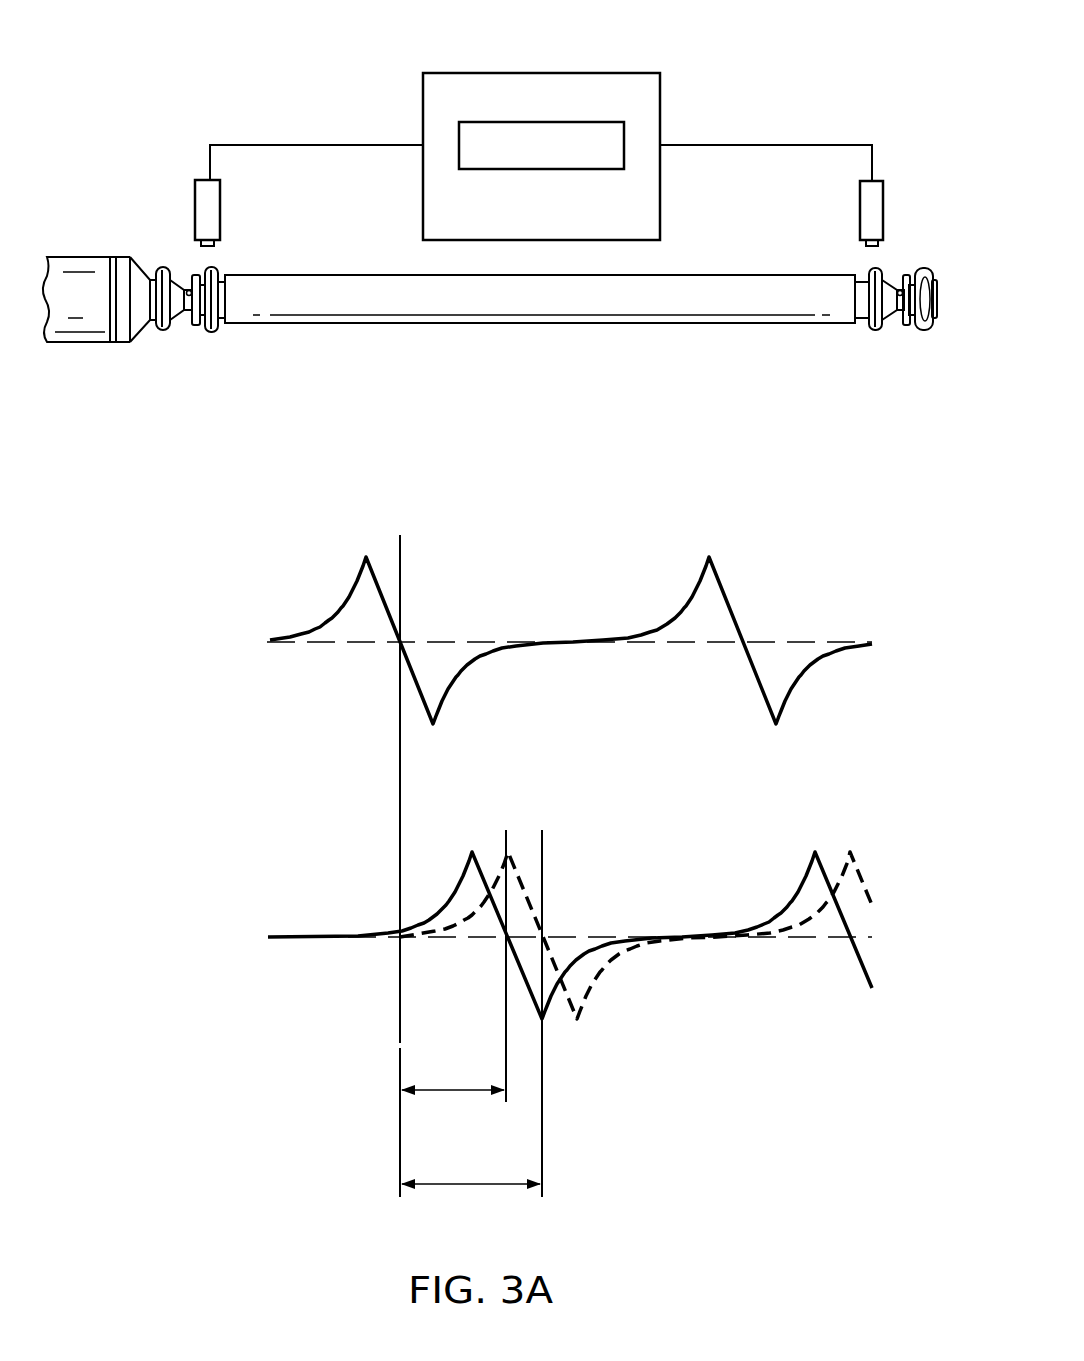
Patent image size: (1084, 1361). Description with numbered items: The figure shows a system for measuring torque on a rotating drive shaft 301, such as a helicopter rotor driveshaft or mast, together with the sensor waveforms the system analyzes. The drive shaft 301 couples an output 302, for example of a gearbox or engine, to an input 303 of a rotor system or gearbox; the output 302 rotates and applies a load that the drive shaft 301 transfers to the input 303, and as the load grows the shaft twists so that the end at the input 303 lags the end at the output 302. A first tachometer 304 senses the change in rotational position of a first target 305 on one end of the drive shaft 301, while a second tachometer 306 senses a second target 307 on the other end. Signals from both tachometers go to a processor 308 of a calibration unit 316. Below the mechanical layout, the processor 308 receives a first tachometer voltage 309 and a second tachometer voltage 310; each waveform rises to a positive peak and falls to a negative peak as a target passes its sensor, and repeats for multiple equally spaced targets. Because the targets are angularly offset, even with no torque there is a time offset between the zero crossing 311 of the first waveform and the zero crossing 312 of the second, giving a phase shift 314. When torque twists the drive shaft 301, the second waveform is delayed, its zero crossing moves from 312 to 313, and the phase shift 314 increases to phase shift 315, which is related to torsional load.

The drive shaft 301 is at (342, 275).
The output 302 is at (88, 342).
The input 303 is at (925, 330).
The first tachometer 304 is at (195, 210).
The first target 305 is at (213, 332).
The second tachometer 306 is at (883, 210).
The second target 307 is at (872, 330).
The processor 308 is at (543, 169).
The first tachometer voltage 309 is at (143, 575).
The second tachometer voltage 310 is at (143, 870).
The zero crossing 311 is at (408, 630).
The zero crossing 312 is at (499, 950).
The zero crossing 313 is at (549, 924).
The phase shift 314 is at (453, 1092).
The phase shift 315 is at (472, 1186).
The calibration unit 316 is at (540, 73).